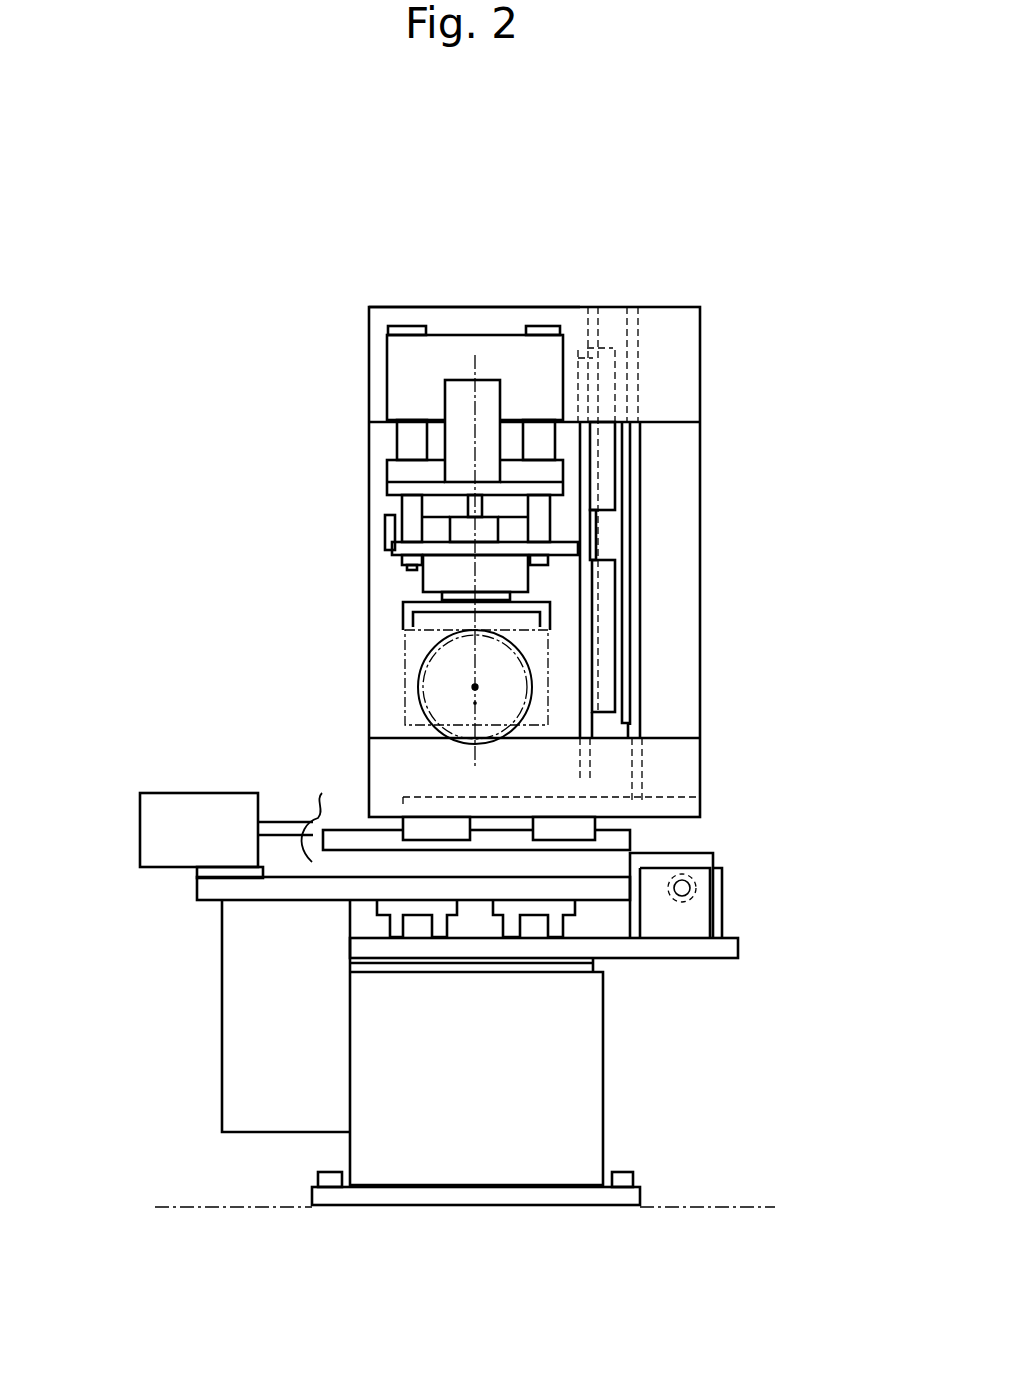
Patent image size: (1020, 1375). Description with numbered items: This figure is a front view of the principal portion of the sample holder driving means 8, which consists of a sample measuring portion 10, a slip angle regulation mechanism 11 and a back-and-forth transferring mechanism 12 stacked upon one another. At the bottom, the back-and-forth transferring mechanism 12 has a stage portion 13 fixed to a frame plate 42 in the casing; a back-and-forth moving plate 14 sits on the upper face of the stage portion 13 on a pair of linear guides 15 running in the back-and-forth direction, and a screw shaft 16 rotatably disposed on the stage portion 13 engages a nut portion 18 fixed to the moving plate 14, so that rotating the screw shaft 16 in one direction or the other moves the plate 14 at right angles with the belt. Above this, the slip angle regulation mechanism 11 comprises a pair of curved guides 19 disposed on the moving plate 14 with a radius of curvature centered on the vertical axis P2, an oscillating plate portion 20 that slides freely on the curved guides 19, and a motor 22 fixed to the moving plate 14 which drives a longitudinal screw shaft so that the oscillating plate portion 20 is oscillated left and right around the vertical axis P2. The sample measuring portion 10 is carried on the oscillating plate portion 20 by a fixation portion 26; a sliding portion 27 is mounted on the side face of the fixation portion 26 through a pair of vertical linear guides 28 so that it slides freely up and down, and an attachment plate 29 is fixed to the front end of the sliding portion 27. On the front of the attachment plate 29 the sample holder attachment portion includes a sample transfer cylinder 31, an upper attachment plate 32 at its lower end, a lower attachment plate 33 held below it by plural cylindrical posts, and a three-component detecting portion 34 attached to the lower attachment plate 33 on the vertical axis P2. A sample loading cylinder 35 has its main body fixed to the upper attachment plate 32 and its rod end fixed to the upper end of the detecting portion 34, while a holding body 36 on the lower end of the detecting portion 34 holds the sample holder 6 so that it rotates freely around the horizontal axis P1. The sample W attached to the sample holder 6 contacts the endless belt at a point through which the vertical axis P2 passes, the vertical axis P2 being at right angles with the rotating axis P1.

The sample holder driving means 8 is at (267, 268).
The sample measuring portion 10 is at (550, 260).
The fixation portion 26 is at (478, 303).
The sliding portion 27 is at (662, 300).
The sample transfer cylinder 31 is at (440, 333).
The upper attachment plate 32 is at (385, 483).
The sample loading cylinder 35 is at (440, 393).
The attachment plate 29 is at (360, 498).
The lower attachment plate 33 is at (385, 543).
The three-component detecting portion 34 is at (530, 578).
The holding body 36 is at (550, 613).
The sample holder 6 is at (420, 655).
The sample W is at (408, 662).
The horizontal axis P1 is at (475, 687).
The vertical axis P2 is at (475, 703).
The linear guides 28 is at (615, 478).
The oscillating plate portion 20 is at (605, 795).
The nut portion 18 is at (647, 860).
The screw shaft 16 is at (682, 896).
The slip angle regulation mechanism 11 is at (680, 838).
The back-and-forth transferring mechanism 12 is at (462, 921).
The stage portion 13 is at (587, 1048).
The back-and-forth moving plate 14 is at (197, 890).
The linear guides 15 is at (500, 938).
The curved guides 19 is at (352, 848).
The motor 22 is at (188, 790).
The frame plate 42 is at (175, 1205).